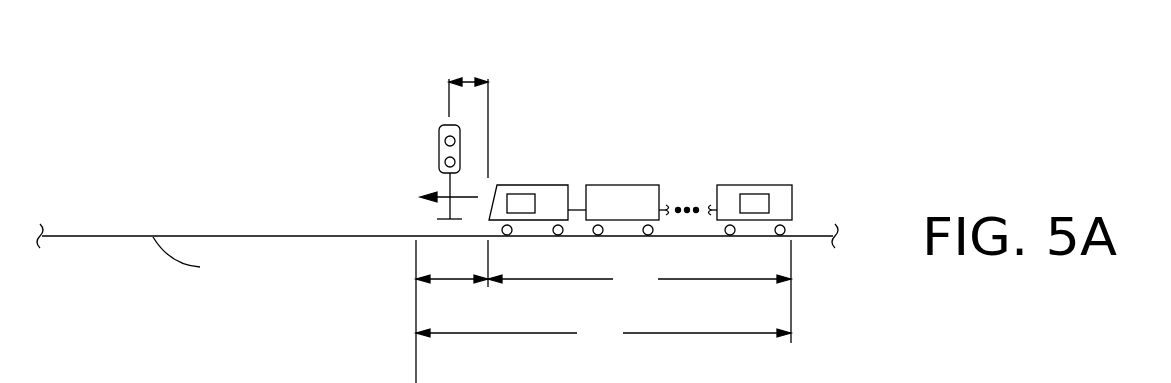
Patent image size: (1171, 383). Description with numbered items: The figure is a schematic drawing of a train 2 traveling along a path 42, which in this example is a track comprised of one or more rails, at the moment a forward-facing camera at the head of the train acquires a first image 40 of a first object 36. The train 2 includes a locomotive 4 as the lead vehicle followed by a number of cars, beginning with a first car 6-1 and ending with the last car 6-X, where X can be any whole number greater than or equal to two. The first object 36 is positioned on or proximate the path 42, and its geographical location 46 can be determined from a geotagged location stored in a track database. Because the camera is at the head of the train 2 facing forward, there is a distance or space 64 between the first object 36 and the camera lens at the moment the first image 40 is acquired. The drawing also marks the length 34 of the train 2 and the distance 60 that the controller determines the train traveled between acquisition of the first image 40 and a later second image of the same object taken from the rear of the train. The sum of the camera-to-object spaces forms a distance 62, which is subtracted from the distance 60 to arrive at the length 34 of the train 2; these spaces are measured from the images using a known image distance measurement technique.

The train 2 is at (664, 87).
The locomotive 4 is at (551, 190).
The first car 6-1 is at (610, 185).
The last car 6-X is at (745, 185).
The length of train 34 is at (639, 279).
The first object 36 is at (445, 126).
The first image 40 is at (488, 178).
The path 42 is at (121, 236).
The geographical location 46 is at (417, 209).
The distance 60 is at (603, 333).
The distance 62 is at (453, 281).
The distance or space 64 is at (470, 80).